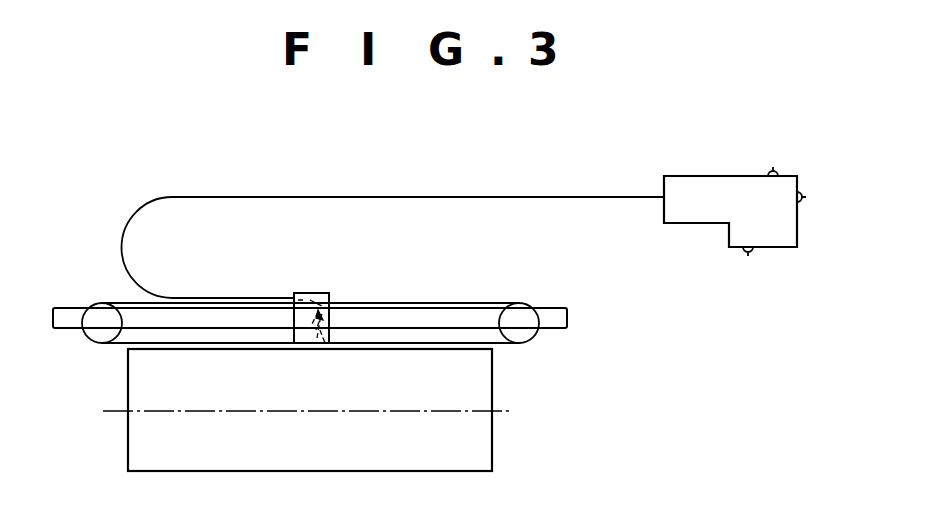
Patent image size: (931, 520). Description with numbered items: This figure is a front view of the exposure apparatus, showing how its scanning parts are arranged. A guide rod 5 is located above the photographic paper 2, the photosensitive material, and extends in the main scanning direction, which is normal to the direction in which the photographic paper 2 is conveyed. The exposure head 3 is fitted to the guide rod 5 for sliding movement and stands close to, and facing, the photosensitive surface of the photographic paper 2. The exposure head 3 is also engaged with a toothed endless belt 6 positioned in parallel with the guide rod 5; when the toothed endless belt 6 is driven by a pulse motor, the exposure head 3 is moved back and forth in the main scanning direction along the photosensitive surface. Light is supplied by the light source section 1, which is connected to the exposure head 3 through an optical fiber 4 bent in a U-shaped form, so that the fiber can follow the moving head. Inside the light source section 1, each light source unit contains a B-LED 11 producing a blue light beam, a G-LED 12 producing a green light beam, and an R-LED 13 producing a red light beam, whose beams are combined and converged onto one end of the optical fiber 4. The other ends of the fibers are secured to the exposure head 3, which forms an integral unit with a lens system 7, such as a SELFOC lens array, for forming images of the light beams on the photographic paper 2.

The light source section 1 is at (693, 182).
The photographic paper 2 is at (428, 348).
The exposure head 3 is at (320, 293).
The optical fiber 4 is at (398, 196).
The guide rod 5 is at (65, 314).
The toothed endless belt 6 is at (113, 301).
The lens system 7 is at (338, 345).
The B-LED 11 is at (800, 190).
The G-LED 12 is at (768, 172).
The R-LED 13 is at (745, 257).